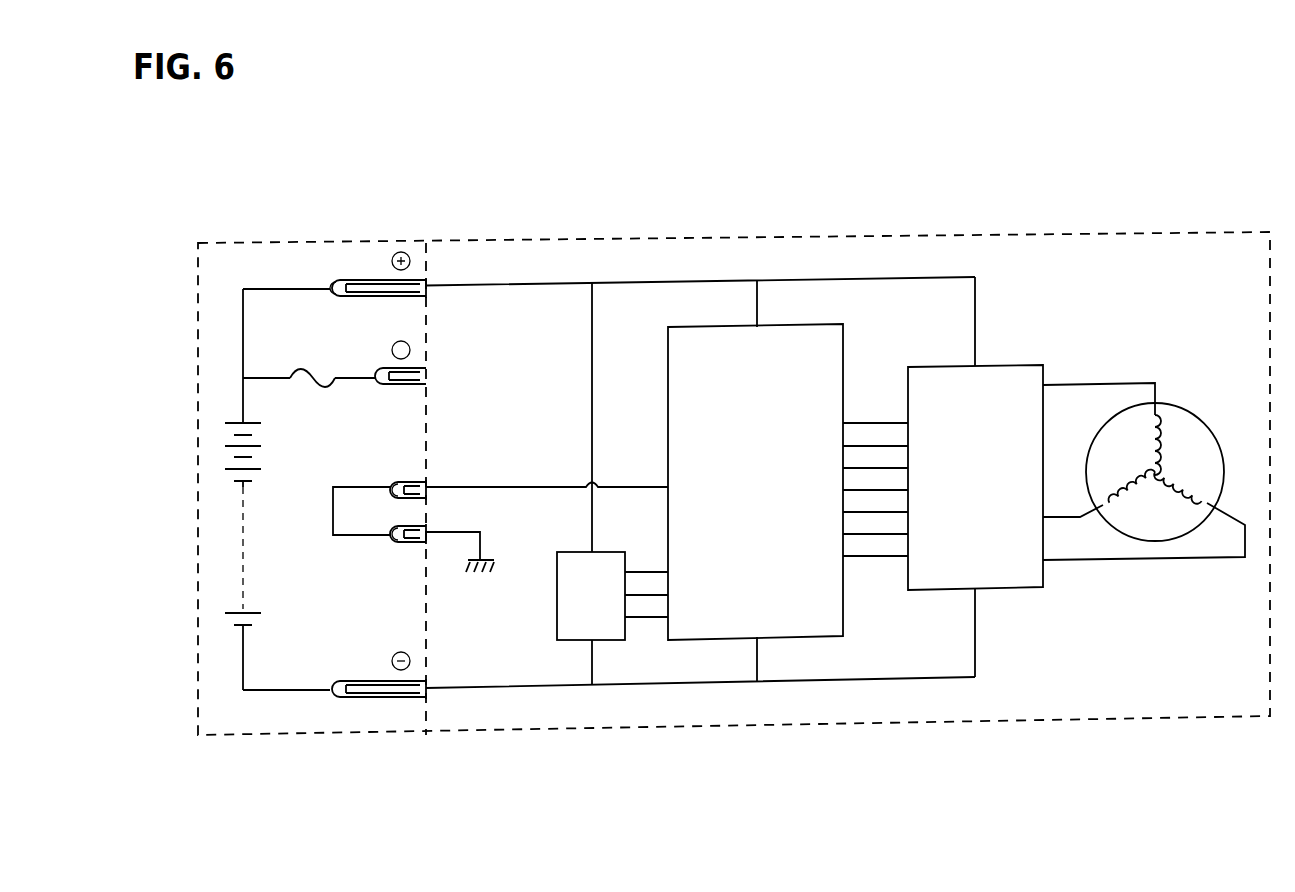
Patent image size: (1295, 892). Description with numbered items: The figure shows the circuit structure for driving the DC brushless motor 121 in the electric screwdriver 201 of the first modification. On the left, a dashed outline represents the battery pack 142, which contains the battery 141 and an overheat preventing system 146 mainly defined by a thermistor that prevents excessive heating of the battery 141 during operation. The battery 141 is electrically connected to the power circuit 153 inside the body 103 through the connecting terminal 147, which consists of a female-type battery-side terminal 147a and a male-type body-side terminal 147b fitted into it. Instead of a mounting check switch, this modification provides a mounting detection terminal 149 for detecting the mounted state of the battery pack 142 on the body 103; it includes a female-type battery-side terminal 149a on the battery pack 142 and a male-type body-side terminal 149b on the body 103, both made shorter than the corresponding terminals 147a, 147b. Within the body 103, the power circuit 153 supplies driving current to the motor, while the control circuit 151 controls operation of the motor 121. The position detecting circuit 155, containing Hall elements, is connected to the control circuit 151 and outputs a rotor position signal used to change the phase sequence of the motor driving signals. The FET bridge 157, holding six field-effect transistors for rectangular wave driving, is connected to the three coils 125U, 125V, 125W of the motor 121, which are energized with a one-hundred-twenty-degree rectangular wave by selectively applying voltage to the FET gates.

The electric screwdriver 201 is at (1030, 178).
The battery pack 142 is at (256, 242).
The battery 141 is at (218, 455).
The connecting terminal 147 is at (436, 268).
The battery-side terminal 147a is at (338, 283).
The body-side terminal 147b is at (380, 294).
The overheat preventing system 146 is at (390, 335).
The mounting detection terminal 149 is at (452, 467).
The battery-side terminal 149a is at (399, 530).
The body-side terminal 149b is at (427, 530).
The body 103 is at (771, 236).
The power circuit 153 is at (633, 280).
The position detecting circuit 155 is at (613, 628).
The control circuit 151 is at (800, 343).
The FET bridge 157 is at (1013, 374).
The DC brushless motor 121 is at (1202, 332).
The coil 125U is at (1150, 420).
The coil 125V is at (1120, 512).
The coil 125W is at (1196, 512).